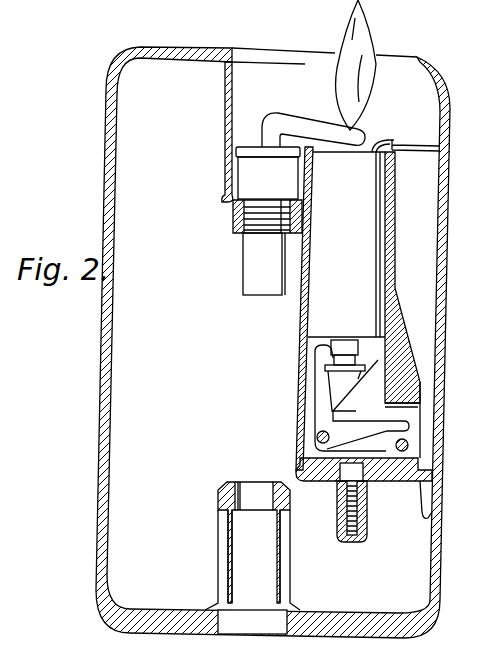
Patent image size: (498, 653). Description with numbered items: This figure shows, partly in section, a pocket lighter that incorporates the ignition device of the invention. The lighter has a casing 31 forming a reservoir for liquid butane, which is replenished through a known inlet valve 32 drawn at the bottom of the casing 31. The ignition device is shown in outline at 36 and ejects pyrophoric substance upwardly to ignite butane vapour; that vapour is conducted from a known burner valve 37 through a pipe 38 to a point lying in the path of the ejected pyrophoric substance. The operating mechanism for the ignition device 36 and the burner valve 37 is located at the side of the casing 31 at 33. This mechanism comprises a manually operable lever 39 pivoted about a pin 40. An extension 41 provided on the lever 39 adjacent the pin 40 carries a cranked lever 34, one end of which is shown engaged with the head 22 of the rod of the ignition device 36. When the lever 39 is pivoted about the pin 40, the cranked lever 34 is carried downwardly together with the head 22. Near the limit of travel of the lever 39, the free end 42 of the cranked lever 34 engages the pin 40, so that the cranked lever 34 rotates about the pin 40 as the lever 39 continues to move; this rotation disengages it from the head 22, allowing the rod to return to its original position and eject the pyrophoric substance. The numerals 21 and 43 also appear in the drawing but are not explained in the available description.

The burner flange 21 is at (385, 142).
The head 22 is at (334, 378).
The casing 31 is at (117, 322).
The inlet valve 32 is at (236, 541).
The side of the casing 33 is at (422, 320).
The cranked lever 34 is at (318, 397).
The ignition device 36 is at (356, 292).
The burner valve 37 is at (248, 258).
The pipe 38 is at (308, 128).
The manually operable lever 39 is at (417, 147).
The pin 40 is at (409, 445).
The extension 41 is at (351, 460).
The free end 42 is at (364, 426).
The pivot pin 43 is at (316, 437).